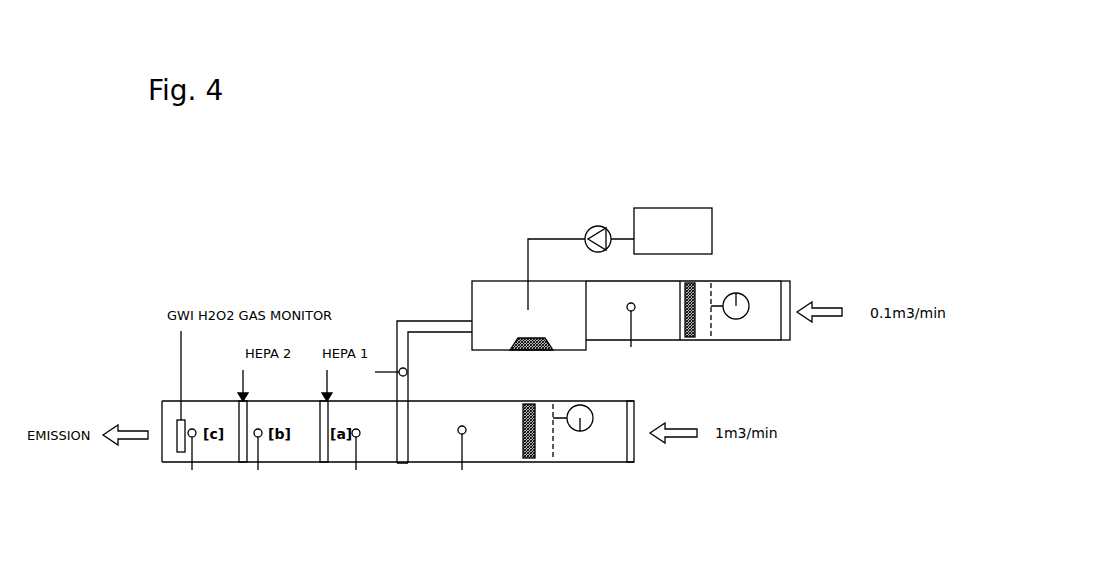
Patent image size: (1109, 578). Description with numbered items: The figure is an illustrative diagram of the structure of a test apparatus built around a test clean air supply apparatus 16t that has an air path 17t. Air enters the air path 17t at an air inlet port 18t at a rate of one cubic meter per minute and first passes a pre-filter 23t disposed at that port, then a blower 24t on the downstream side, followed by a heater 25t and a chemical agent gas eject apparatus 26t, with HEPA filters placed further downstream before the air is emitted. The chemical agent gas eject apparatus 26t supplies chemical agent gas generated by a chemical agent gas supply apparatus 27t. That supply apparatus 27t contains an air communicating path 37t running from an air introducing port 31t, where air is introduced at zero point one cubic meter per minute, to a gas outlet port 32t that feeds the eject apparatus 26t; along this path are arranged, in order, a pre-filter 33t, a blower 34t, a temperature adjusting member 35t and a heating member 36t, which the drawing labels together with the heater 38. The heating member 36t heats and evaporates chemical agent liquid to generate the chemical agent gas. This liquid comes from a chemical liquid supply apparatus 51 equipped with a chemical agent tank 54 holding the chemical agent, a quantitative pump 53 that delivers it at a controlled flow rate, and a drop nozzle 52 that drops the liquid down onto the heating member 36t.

The test clean air supply apparatus 16t is at (398, 268).
The air path 17t is at (422, 455).
The chemical agent gas eject apparatus 26t is at (412, 445).
The chemical agent gas supply apparatus 27t is at (603, 266).
The gas outlet port 32t is at (472, 325).
The heater 38 is at (587, 352).
The heating member 36t is at (532, 340).
The air communicating path 37t is at (598, 291).
The air introducing port 31t is at (775, 310).
The temperature adjusting member 35t is at (681, 305).
The blower 34t is at (738, 294).
The pre-filter 33t is at (795, 330).
The air inlet port 18t is at (628, 450).
The heater 25t is at (519, 420).
The blower 24t is at (579, 426).
The pre-filter 23t is at (634, 445).
The drop nozzle 52 is at (533, 300).
The quantitative pump 53 is at (598, 225).
The chemical liquid supply apparatus 51 is at (675, 208).
The chemical agent tank 54 is at (713, 208).